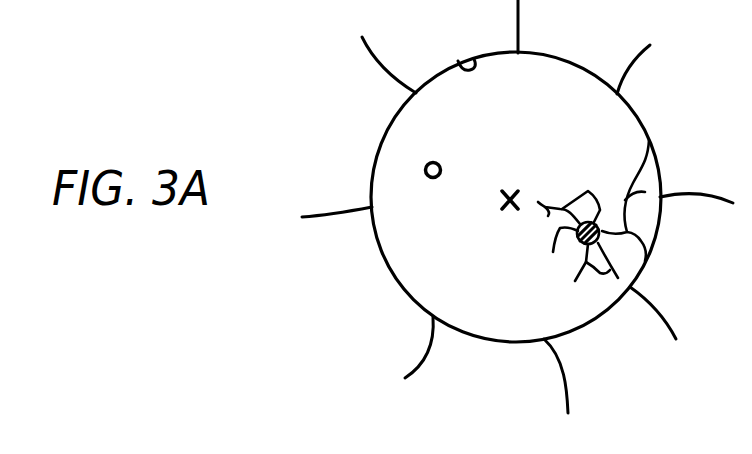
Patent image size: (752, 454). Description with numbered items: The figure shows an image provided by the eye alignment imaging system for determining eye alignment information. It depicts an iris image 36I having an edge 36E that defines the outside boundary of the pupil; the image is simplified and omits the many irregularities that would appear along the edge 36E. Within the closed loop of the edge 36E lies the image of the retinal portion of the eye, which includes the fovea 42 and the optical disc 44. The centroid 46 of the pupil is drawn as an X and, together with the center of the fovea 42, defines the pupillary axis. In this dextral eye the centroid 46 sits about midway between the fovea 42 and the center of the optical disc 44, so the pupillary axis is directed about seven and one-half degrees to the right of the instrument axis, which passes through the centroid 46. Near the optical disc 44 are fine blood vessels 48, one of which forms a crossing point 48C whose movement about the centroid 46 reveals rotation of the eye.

The edge 36E is at (458, 60).
The iris image 36I is at (518, 18).
The fovea 42 is at (440, 160).
The optical disc 44 is at (598, 218).
The centroid 46 is at (506, 212).
The fine blood vessels 48 is at (597, 275).
The crossing point 48C is at (548, 210).